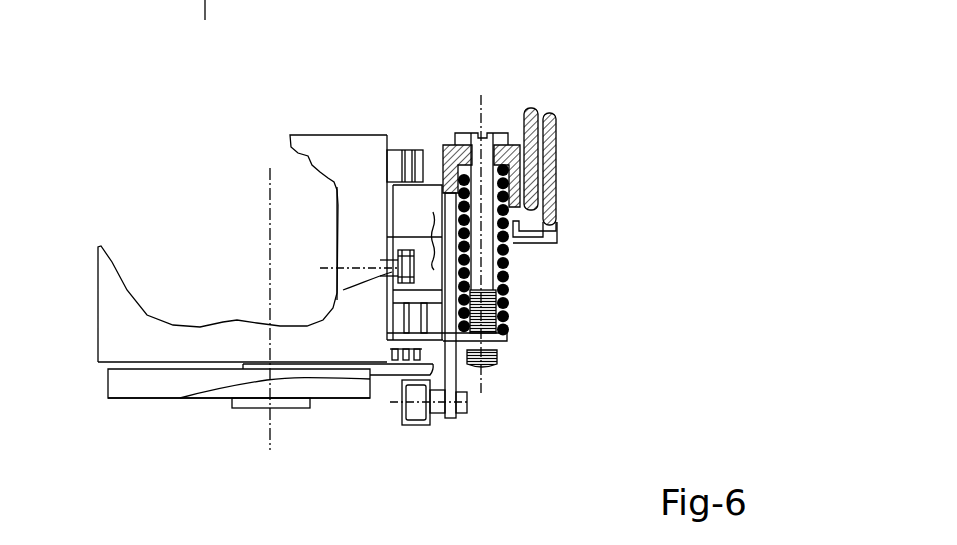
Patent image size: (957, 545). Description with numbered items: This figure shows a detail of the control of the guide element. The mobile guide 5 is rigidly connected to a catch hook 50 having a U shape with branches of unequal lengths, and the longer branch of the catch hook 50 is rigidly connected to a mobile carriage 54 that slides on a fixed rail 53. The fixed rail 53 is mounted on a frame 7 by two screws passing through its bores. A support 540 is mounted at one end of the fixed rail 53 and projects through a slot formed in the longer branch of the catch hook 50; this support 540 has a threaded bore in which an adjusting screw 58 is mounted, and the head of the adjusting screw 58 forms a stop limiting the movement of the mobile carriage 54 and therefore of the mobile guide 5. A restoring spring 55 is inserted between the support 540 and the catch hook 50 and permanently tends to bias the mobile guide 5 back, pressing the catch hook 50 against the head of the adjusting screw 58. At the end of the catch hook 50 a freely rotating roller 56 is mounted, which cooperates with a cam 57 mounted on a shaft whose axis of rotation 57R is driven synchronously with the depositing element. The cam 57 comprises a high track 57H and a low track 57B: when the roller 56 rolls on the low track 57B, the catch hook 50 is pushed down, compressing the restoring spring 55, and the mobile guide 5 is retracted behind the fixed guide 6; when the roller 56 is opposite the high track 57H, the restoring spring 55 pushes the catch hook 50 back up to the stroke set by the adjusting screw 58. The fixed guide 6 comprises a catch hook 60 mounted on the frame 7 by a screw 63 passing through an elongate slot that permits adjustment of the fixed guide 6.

The mobile guide 5 is at (522, 138).
The fixed guide 6 is at (556, 152).
The frame 7 is at (352, 172).
The catch hook 50 is at (457, 372).
The fixed rail 53 is at (402, 167).
The mobile carriage 54 is at (313, 203).
The support 540 is at (503, 340).
The restoring spring 55 is at (508, 299).
The roller 56 is at (415, 400).
The cam 57 is at (168, 380).
The low track 57B is at (148, 400).
The high track 57H is at (384, 381).
The axis of rotation 57R is at (274, 434).
The adjusting screw 58 is at (507, 263).
The catch hook 60 is at (337, 288).
The screw 63 is at (392, 273).